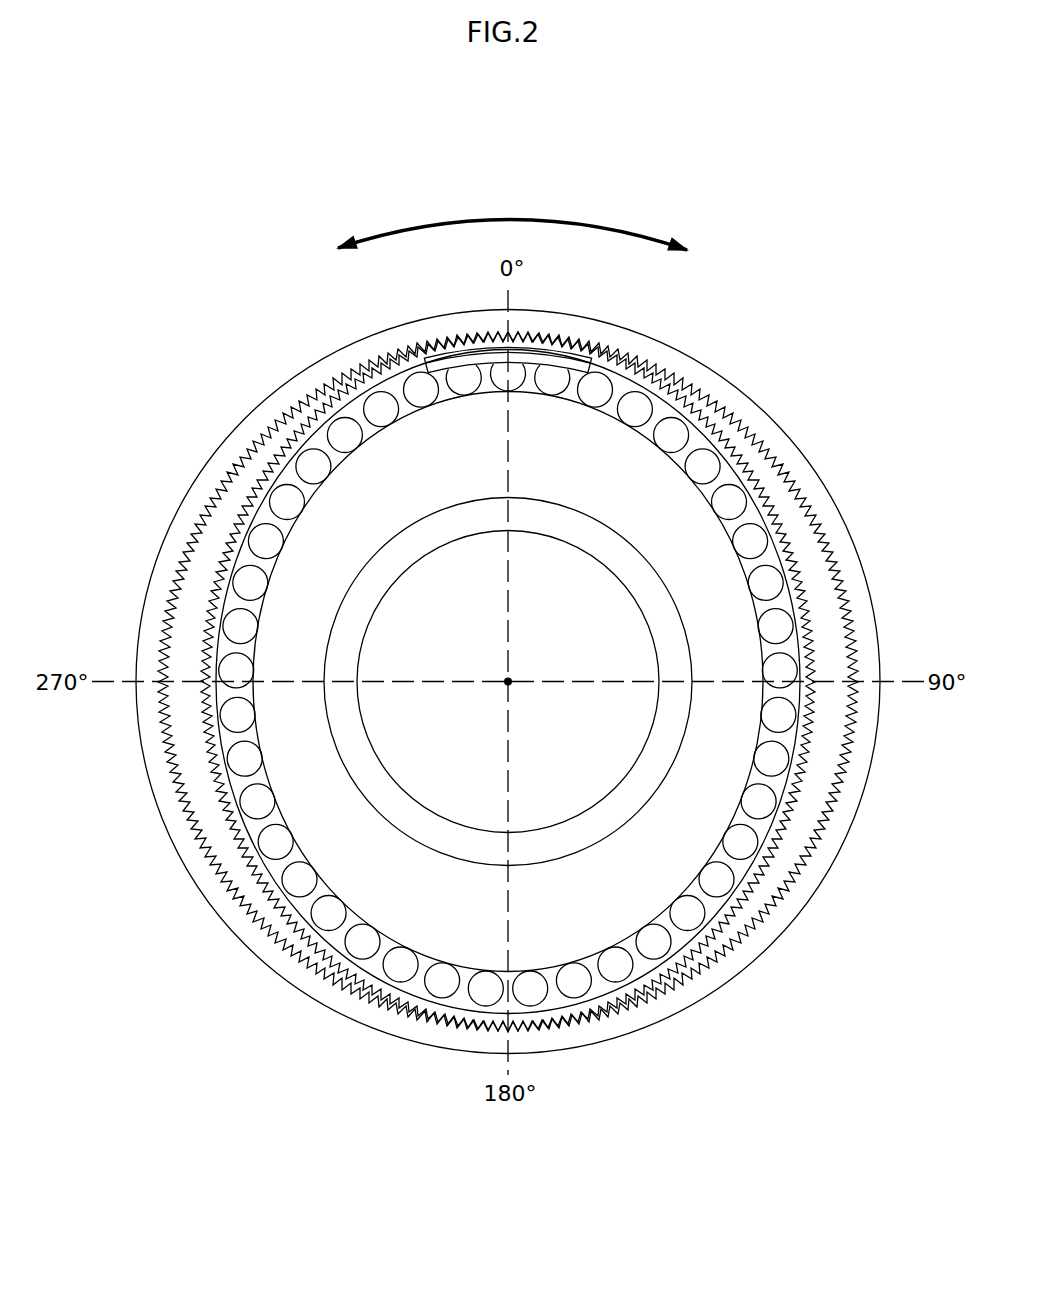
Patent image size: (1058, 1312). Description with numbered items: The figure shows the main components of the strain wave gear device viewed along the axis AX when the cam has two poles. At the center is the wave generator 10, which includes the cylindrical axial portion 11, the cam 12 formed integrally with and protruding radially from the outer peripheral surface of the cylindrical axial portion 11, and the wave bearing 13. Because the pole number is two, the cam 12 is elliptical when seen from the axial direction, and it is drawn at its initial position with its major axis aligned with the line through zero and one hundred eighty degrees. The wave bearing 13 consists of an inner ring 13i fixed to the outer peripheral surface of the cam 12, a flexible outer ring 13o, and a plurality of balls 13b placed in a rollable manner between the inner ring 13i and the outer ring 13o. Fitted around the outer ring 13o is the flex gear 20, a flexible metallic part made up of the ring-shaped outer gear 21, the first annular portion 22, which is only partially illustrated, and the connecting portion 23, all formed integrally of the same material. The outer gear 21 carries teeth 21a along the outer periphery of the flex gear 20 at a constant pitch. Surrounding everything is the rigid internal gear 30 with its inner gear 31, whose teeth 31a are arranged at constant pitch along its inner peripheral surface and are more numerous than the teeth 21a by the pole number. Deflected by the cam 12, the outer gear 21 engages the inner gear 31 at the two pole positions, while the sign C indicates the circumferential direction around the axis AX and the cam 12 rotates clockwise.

The wave generator 10 is at (508, 664).
The cylindrical axial portion 11 is at (602, 567).
The cam 12 is at (585, 462).
The wave bearing 13 is at (465, 682).
The outer ring 13o is at (230, 796).
The inner ring 13i is at (257, 778).
The balls 13b is at (318, 458).
The flex gear 20 is at (548, 635).
The outer gear 21 is at (517, 337).
The teeth 21a is at (784, 518).
The first annular portion 22 is at (563, 362).
The connecting portion 23 is at (536, 346).
The internal gear 30 is at (531, 661).
The inner gear 31 is at (803, 458).
The teeth 31a is at (795, 486).
The axis AX is at (508, 682).
The circumferential direction C is at (525, 213).